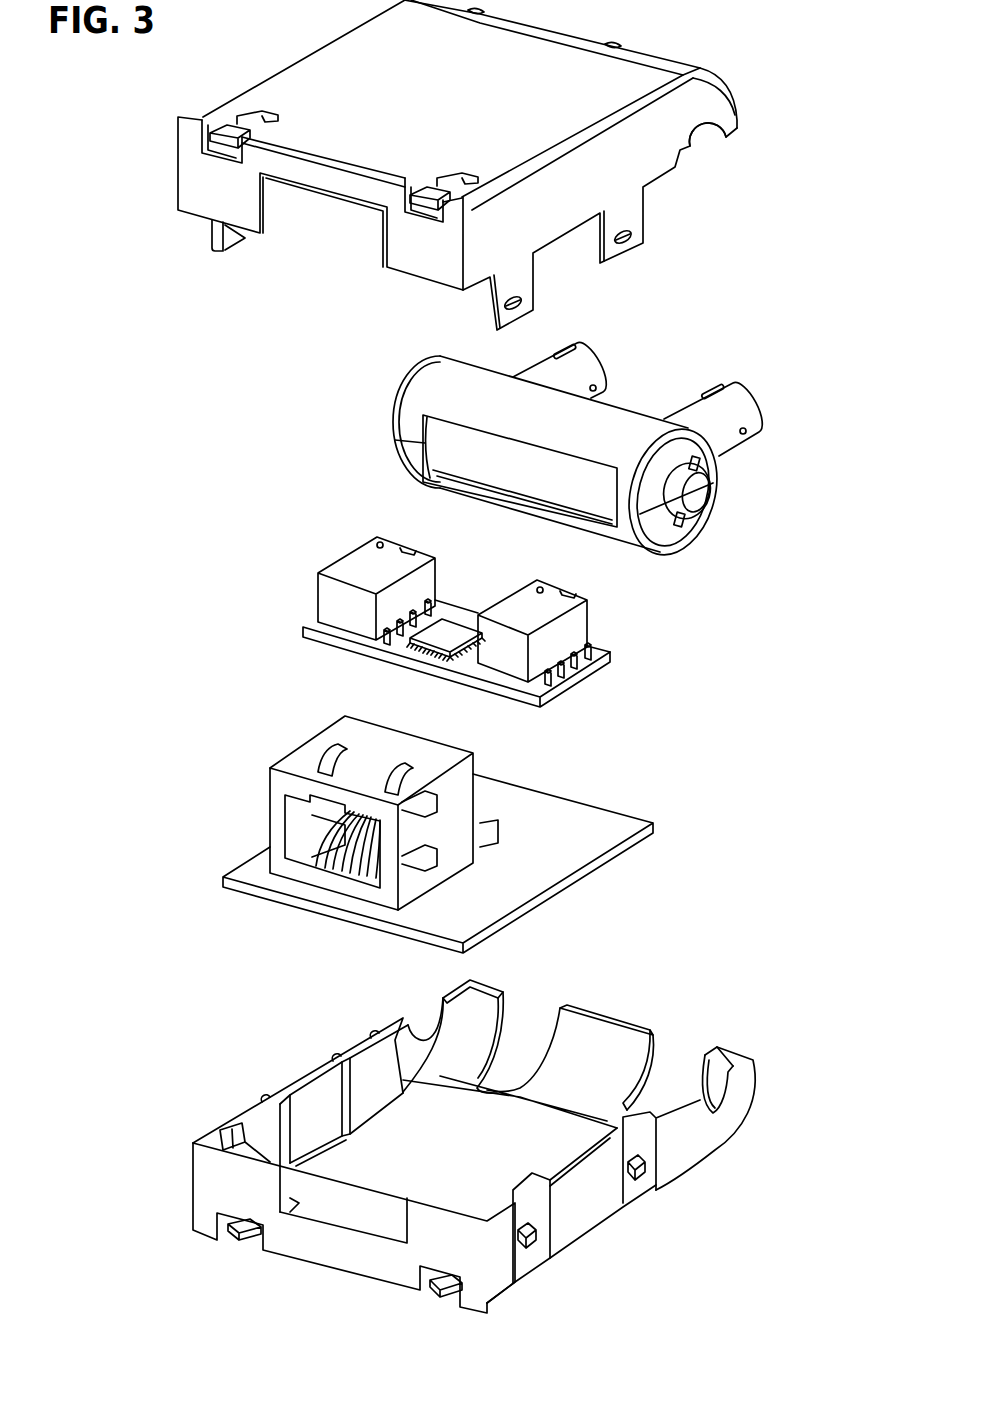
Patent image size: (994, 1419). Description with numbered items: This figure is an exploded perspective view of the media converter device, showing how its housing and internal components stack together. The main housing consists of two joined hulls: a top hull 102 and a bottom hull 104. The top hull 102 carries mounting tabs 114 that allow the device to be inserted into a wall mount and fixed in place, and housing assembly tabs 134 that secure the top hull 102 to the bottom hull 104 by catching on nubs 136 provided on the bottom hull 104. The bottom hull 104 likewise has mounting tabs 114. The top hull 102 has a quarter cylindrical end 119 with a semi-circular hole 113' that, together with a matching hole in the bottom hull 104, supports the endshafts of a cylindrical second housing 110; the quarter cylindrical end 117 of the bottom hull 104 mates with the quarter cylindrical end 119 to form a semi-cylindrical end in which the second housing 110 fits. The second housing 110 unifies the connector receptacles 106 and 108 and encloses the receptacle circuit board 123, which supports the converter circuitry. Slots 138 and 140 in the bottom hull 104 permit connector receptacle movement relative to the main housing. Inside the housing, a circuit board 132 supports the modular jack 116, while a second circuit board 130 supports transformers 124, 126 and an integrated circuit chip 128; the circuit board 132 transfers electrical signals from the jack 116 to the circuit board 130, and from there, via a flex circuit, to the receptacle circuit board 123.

The top hull 102 is at (498, 165).
The bottom hull 104 is at (516, 1137).
The connector receptacle 106 is at (747, 407).
The connector receptacle 108 is at (607, 365).
The second housing 110 is at (587, 451).
The semi-circular hole 113' is at (720, 161).
The mounting tabs 114 is at (446, 180).
The RJ-45 jack 116 is at (287, 788).
The quarter cylindrical end 117 is at (747, 1080).
The quarter cylindrical end 119 is at (723, 103).
The receptacle circuit board 123 is at (447, 458).
The transformer 124 is at (330, 597).
The transformer 126 is at (585, 618).
The integrated circuit chip 128 is at (450, 620).
The circuit board 130 is at (460, 642).
The circuit board 132 is at (613, 860).
The housing assembly tabs 134 is at (640, 247).
The nubs 136 is at (640, 1178).
The slot 138 is at (503, 1008).
The slot 140 is at (650, 1053).